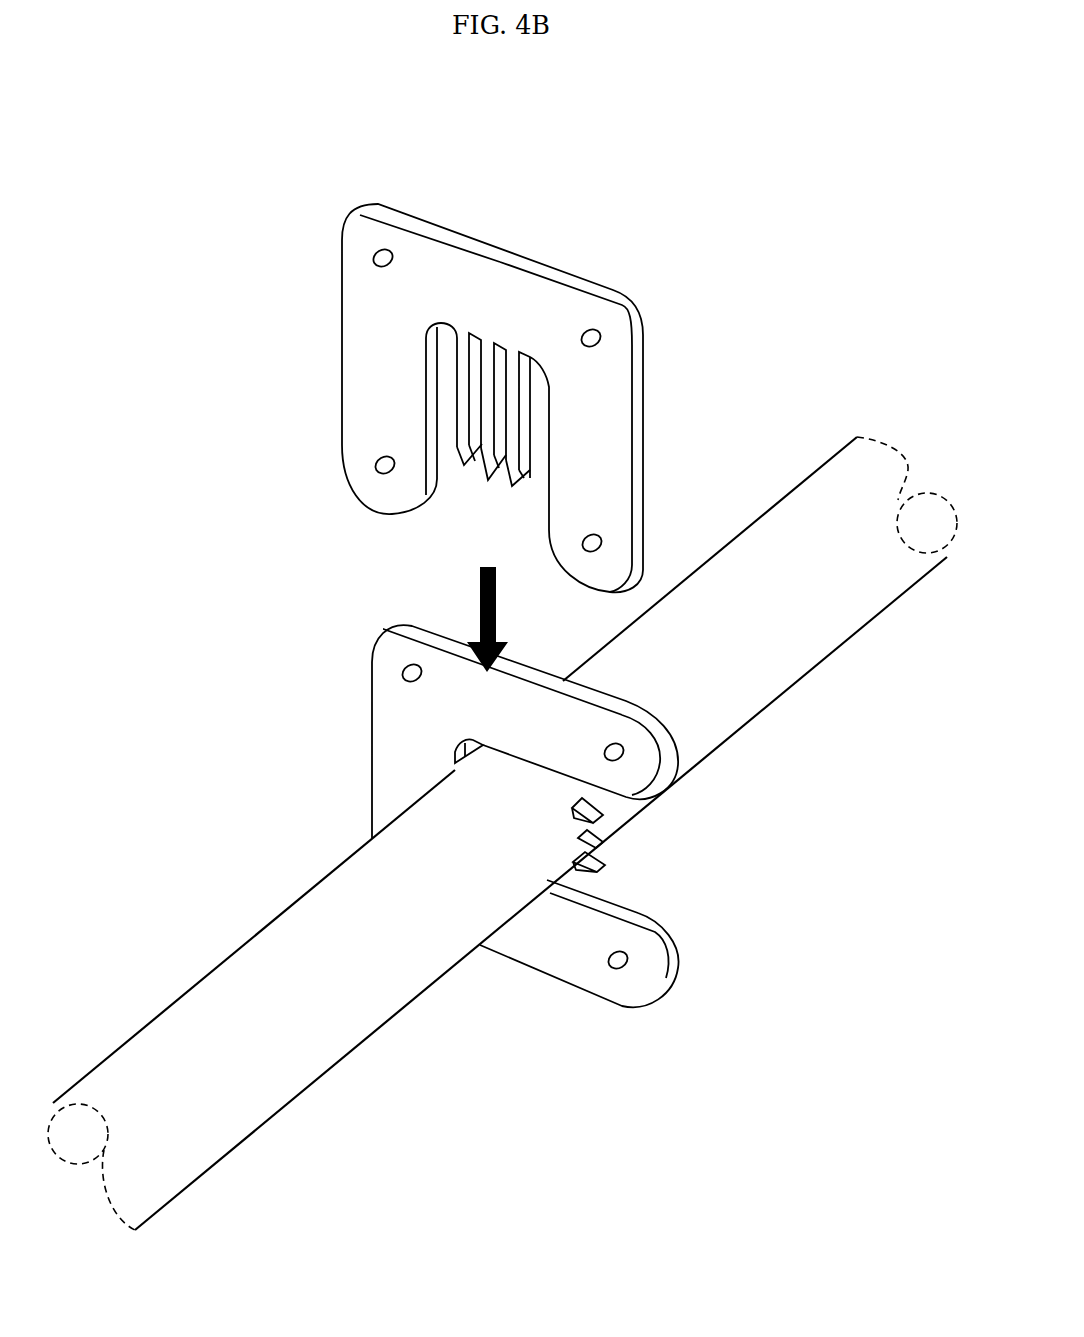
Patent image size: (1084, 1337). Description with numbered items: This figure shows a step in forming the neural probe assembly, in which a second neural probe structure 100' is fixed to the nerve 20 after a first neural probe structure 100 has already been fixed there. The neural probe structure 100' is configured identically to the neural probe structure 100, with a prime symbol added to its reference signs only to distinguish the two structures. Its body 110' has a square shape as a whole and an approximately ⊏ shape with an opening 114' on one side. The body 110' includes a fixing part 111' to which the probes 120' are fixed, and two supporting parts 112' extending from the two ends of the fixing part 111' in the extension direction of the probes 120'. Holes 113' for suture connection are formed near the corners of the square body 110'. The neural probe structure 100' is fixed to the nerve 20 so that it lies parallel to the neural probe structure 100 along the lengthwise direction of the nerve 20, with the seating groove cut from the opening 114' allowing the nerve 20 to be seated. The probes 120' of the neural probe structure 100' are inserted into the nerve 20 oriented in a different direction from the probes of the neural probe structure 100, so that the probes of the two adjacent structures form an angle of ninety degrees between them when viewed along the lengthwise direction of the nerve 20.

The nerve 20 is at (818, 610).
The neural probe structure 100 is at (473, 816).
The neural probe structure 100' is at (544, 379).
The body 110' is at (436, 322).
The fixing part 111' is at (566, 383).
The supporting part 112' is at (647, 463).
The hole 113' is at (324, 262).
The opening 114' is at (541, 495).
The probe 120' is at (458, 451).